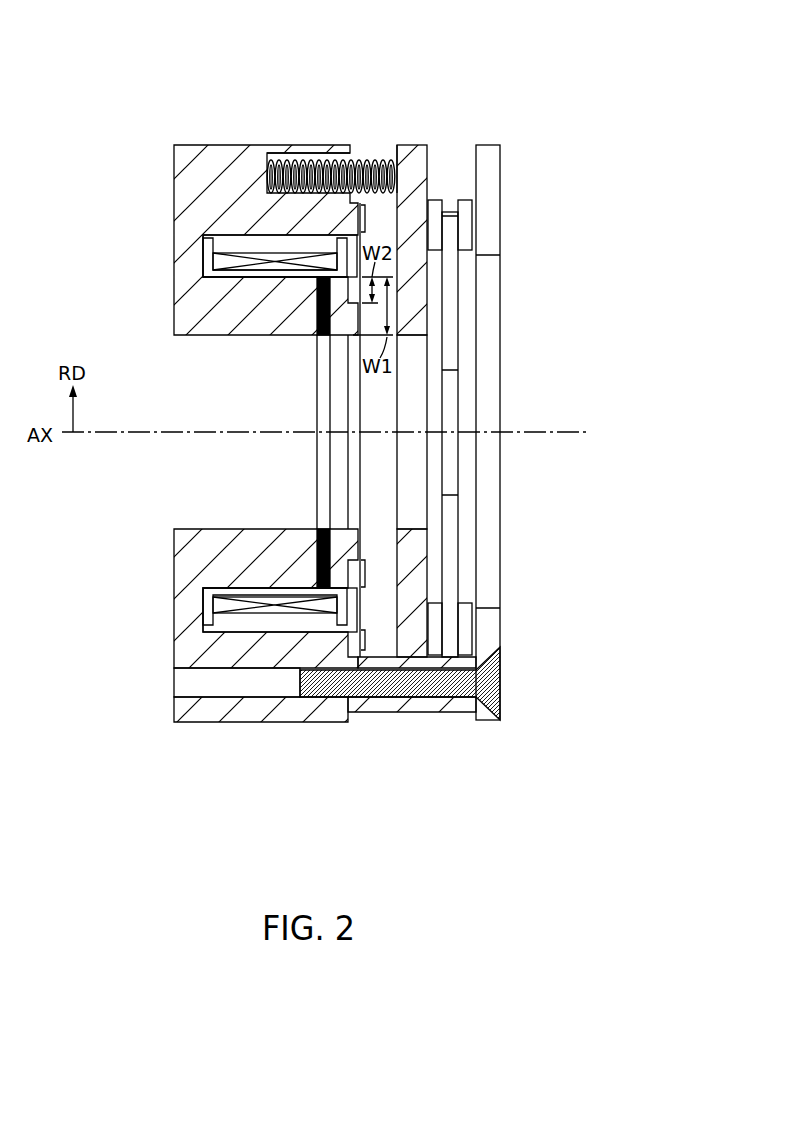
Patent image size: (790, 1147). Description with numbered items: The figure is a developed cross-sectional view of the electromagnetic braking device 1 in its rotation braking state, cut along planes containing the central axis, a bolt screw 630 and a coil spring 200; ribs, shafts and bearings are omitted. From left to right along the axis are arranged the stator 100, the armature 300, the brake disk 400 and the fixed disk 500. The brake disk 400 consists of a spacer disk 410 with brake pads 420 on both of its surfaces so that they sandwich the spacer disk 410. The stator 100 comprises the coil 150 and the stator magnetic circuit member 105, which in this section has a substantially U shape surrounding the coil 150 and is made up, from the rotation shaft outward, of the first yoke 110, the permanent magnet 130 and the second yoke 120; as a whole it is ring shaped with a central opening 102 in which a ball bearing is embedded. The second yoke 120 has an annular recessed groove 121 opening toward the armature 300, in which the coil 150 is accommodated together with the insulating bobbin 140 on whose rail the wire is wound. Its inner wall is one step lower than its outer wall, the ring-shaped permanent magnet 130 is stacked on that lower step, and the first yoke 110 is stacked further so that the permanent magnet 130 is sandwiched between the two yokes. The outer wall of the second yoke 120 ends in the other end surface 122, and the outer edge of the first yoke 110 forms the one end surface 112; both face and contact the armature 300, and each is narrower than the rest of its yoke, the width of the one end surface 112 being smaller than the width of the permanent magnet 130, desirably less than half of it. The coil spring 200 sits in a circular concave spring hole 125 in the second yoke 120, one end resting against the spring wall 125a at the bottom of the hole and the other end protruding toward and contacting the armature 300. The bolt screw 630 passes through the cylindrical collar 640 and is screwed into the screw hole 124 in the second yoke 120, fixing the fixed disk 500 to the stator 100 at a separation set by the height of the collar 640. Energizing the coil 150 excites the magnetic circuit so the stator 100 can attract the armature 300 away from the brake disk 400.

The electromagnetic braking device 1 is at (641, 38).
The stator 100 is at (279, 100).
The opening 102 is at (368, 495).
The stator magnetic circuit member 105 is at (385, 790).
The first yoke 110 is at (352, 577).
The one end surface 112 is at (372, 290).
The second yoke 120 is at (272, 658).
The annular recessed groove 121 is at (373, 608).
The other end surface 122 is at (366, 218).
The screw hole 124 is at (333, 688).
The spring hole 125 is at (353, 151).
The spring wall 125a is at (262, 155).
The permanent magnet 130 is at (318, 340).
The bobbin 140 is at (206, 268).
The coil 150 is at (212, 257).
The coil spring 200 is at (388, 167).
The armature 300 is at (407, 145).
The brake disk 400 is at (543, 87).
The spacer disk 410 is at (450, 210).
The brake pad 420 is at (433, 200).
The fixed disk 500 is at (490, 145).
The bolt screw 630 is at (500, 672).
The cylindrical collar 640 is at (435, 713).